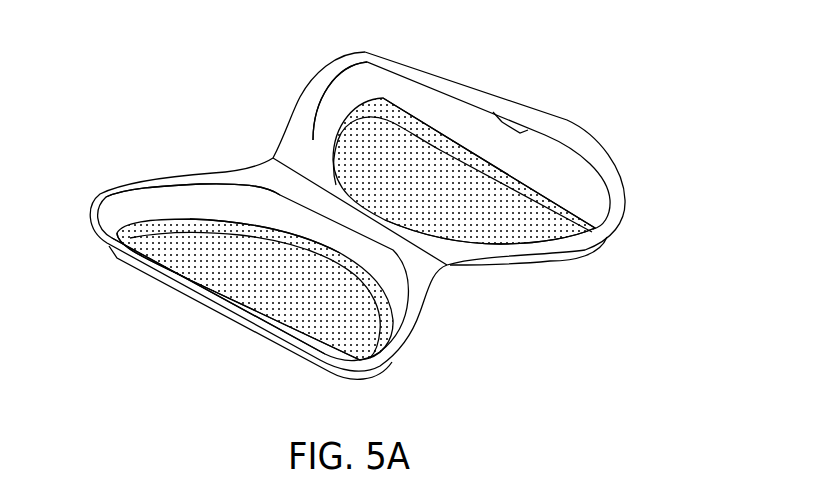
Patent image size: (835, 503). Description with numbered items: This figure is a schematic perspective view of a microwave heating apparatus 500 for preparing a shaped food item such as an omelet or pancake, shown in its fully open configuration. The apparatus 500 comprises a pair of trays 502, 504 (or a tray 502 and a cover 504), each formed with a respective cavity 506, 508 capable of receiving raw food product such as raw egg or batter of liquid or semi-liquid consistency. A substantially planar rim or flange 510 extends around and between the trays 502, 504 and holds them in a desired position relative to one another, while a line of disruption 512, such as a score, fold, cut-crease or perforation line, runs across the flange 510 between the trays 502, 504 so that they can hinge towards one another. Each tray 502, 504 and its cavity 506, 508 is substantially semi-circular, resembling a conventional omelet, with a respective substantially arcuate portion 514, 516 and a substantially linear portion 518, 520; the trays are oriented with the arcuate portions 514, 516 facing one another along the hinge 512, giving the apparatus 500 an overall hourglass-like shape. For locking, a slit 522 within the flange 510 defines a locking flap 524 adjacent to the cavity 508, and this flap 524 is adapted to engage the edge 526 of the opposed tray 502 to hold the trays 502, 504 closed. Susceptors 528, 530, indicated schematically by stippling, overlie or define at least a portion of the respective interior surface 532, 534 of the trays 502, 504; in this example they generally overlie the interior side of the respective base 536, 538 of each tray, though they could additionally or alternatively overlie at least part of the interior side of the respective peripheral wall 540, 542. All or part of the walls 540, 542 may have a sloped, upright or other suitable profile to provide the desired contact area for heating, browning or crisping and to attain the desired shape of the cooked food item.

The microwave heating apparatus 500 is at (371, 213).
The tray 502 is at (420, 355).
The tray 504 is at (593, 267).
The cavity 506 is at (180, 202).
The cavity 508 is at (323, 115).
The rim or flange 510 is at (238, 172).
The line of disruption 512 is at (275, 156).
The arcuate portion 514 is at (288, 213).
The arcuate portion 516 is at (437, 223).
The linear portion 518 is at (289, 326).
The linear portion 520 is at (428, 109).
The slit 522 is at (518, 130).
The locking flap 524 is at (505, 122).
The edge 526 is at (202, 302).
The susceptor 528 is at (142, 232).
The susceptor 530 is at (358, 102).
The interior surface 532 is at (280, 279).
The interior surface 534 is at (385, 199).
The base 536 is at (168, 255).
The base 538 is at (532, 207).
The peripheral wall 540 is at (308, 362).
The peripheral wall 542 is at (545, 258).